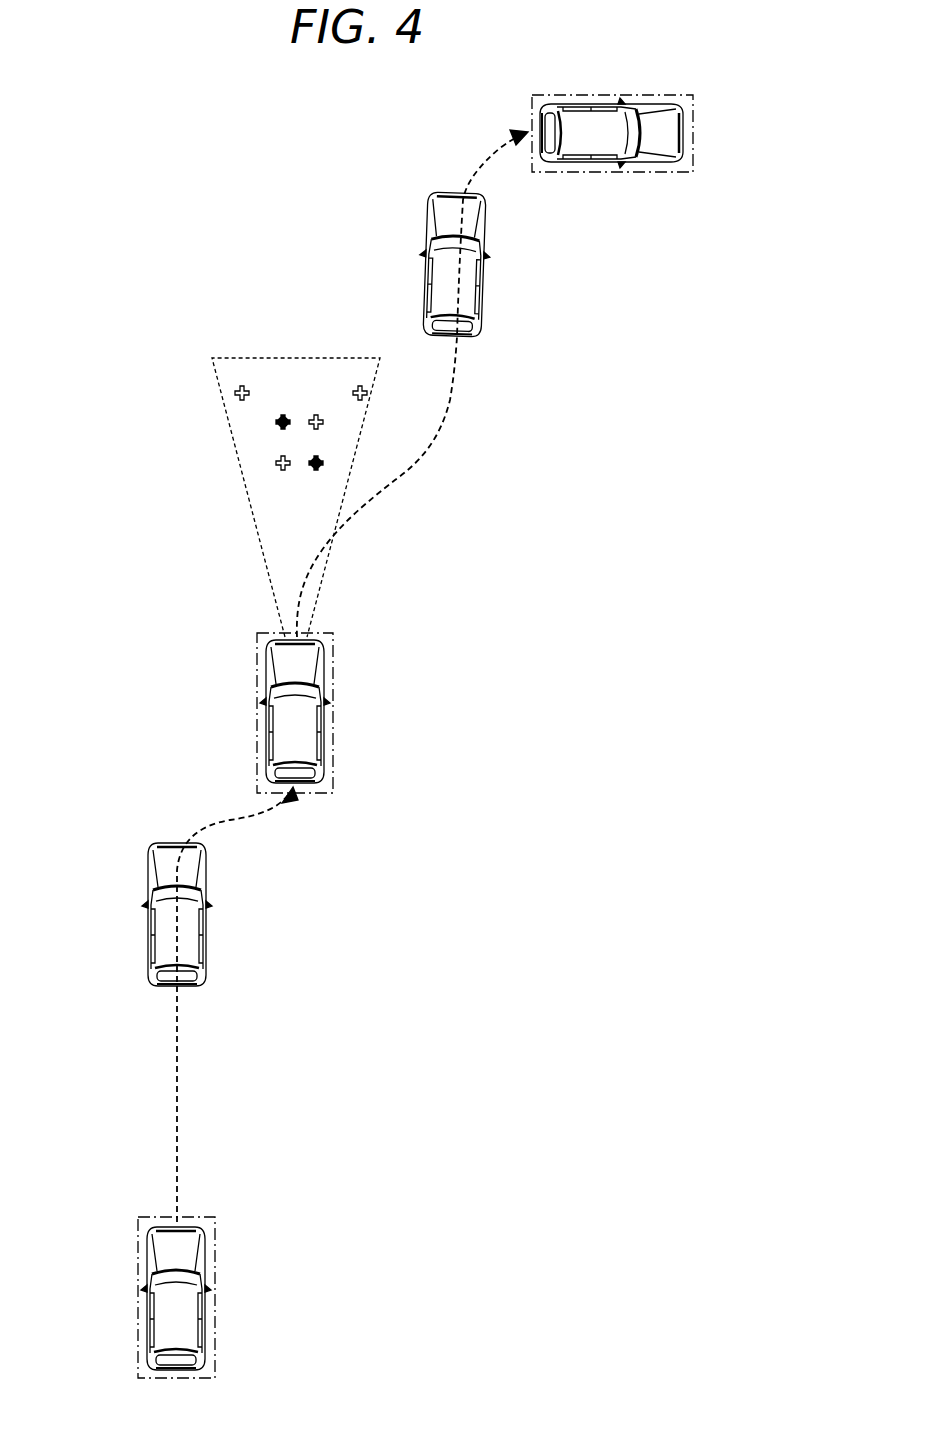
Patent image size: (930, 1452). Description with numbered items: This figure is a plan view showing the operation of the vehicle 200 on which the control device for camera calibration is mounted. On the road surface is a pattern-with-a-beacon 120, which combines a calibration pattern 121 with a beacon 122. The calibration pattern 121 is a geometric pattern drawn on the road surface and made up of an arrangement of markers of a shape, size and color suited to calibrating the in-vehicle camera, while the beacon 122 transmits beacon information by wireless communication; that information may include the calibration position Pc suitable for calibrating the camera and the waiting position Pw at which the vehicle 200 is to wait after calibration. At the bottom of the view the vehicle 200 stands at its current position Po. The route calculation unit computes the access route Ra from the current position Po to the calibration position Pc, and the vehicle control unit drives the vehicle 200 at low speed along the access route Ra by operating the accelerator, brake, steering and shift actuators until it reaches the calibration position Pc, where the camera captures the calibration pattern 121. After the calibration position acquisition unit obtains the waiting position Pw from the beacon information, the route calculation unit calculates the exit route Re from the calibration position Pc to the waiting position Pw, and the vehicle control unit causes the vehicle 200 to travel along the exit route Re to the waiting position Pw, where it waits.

The pattern-with-a-beacon 120 is at (293, 357).
The calibration pattern 121 is at (234, 386).
The beacon 122 is at (280, 427).
The vehicle 200 is at (205, 1310).
The current position Po is at (138, 1268).
The calibration position Pc is at (257, 660).
The waiting position Pw is at (678, 175).
The access route Ra is at (177, 1108).
The exit route Re is at (433, 440).